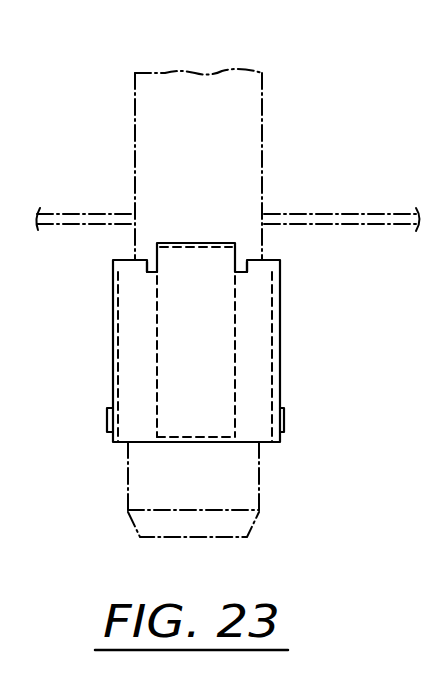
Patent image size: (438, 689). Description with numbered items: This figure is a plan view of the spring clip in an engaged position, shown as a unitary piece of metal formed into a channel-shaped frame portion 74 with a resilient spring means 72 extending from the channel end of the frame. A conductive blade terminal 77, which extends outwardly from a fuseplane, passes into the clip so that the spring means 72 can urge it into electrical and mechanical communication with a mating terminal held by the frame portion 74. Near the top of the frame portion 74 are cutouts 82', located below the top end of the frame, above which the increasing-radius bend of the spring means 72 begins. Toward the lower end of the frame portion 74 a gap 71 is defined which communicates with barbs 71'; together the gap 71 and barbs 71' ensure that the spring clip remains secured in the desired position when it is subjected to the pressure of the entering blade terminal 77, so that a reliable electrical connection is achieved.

The conductive blade terminal 77 is at (264, 113).
The frame portion 74 is at (137, 352).
The resilient spring means 72 is at (217, 258).
The cutouts 82' is at (199, 285).
The gap 71 is at (78, 435).
The barbs 71' is at (315, 427).